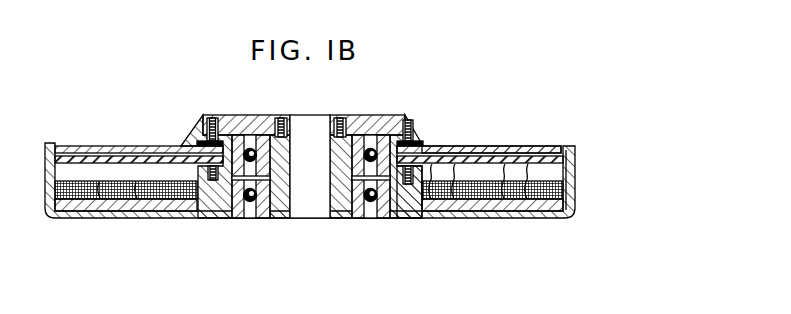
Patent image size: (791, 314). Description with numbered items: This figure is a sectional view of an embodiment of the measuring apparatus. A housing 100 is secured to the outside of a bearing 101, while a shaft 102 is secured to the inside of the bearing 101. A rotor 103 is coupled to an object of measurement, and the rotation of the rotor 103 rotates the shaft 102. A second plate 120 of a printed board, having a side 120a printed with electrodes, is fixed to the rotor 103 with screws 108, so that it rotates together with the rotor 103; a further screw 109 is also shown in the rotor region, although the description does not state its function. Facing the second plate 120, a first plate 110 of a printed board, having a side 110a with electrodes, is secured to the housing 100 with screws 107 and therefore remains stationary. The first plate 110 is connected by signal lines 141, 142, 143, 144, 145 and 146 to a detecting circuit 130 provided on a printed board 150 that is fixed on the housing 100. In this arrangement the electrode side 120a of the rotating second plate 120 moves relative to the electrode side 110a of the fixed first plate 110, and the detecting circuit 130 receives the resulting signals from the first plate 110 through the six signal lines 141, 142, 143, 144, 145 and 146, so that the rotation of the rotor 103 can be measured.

The housing 100 is at (211, 206).
The bearing 101 is at (371, 212).
The shaft 102 is at (322, 207).
The rotor 103 is at (380, 115).
The screws 107 is at (408, 210).
The screws 108 is at (425, 108).
The fastening screw 109 is at (352, 103).
The first plate 110 is at (569, 150).
The side with electrodes 110a is at (465, 160).
The second plate 120 is at (545, 144).
The side printed with electrodes 120a is at (497, 150).
The detecting circuit 130 is at (172, 203).
The signal line 141 is at (570, 168).
The signal line 142 is at (513, 210).
The signal line 143 is at (462, 211).
The signal line 144 is at (446, 206).
The signal line 145 is at (99, 182).
The signal line 146 is at (136, 182).
The printed board 150 is at (497, 206).